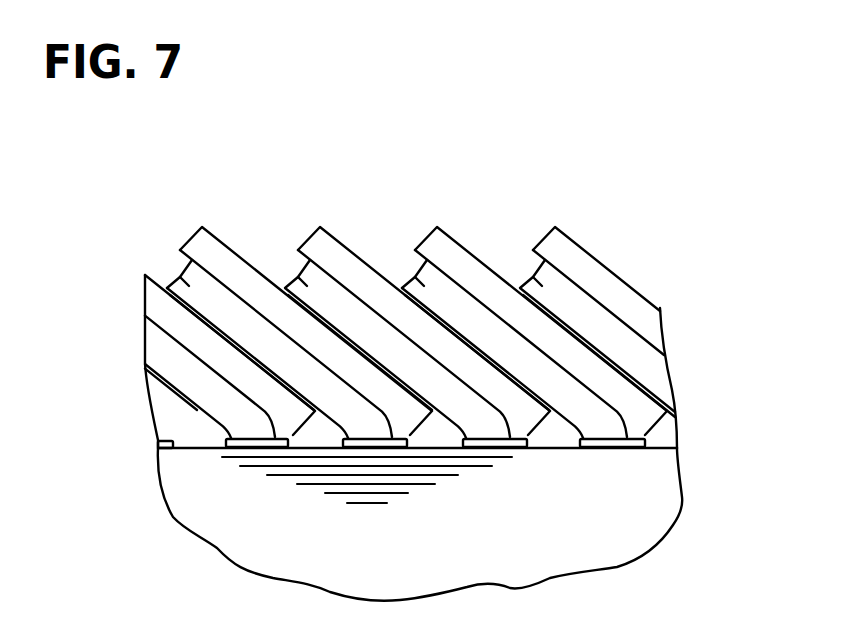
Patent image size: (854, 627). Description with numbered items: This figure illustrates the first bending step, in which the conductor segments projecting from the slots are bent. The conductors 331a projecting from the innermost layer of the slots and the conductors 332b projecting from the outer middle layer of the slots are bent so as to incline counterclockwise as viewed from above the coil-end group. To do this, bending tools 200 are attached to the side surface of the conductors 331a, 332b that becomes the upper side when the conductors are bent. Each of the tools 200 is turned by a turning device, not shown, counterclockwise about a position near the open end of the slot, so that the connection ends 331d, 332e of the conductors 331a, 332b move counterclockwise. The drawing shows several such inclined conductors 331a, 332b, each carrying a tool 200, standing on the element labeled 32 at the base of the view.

The substrate 32 is at (657, 531).
The bending tool 200 is at (210, 248).
The conductor projecting from the innermost layer 331a is at (395, 310).
The conductor projecting from the outer middle layer 332b is at (270, 344).
The connection end 331d is at (294, 195).
The connection end 332e is at (178, 277).